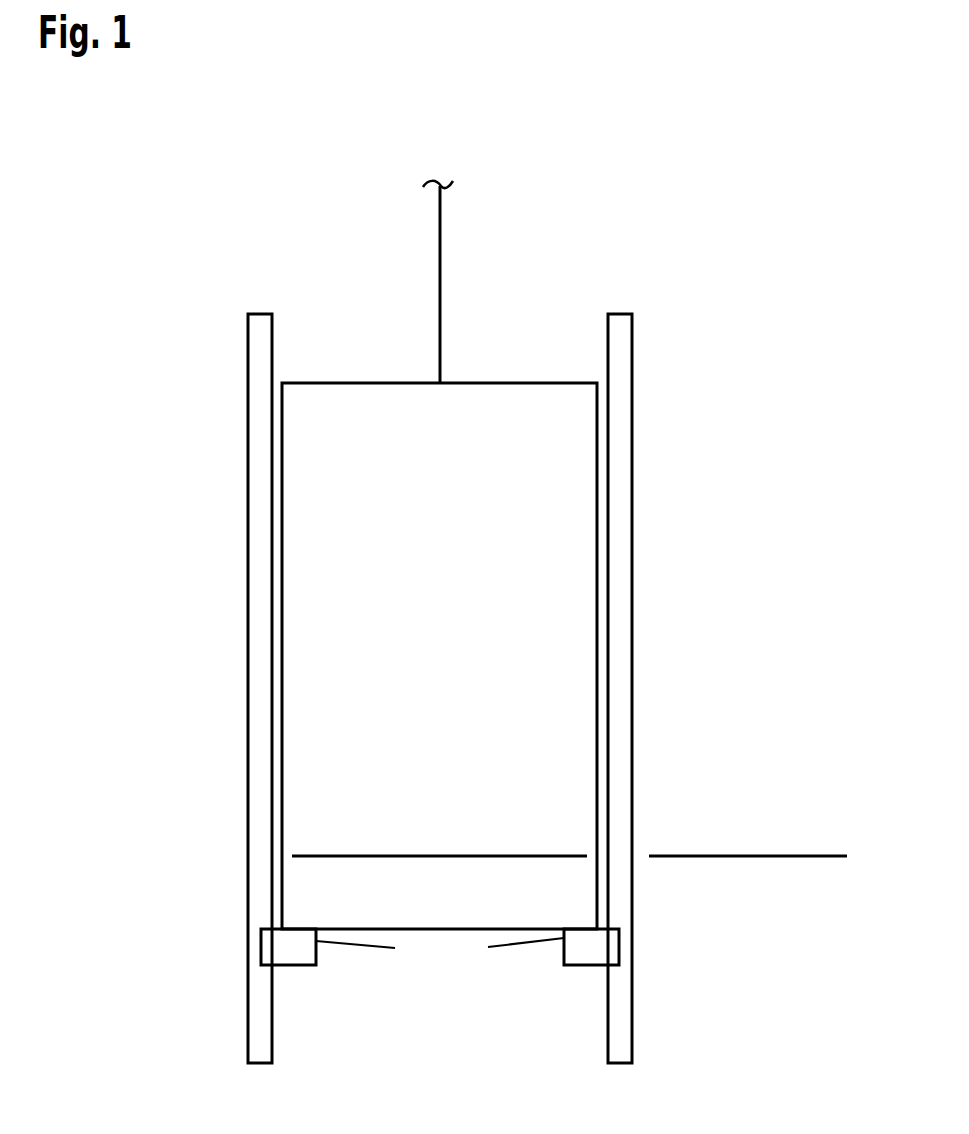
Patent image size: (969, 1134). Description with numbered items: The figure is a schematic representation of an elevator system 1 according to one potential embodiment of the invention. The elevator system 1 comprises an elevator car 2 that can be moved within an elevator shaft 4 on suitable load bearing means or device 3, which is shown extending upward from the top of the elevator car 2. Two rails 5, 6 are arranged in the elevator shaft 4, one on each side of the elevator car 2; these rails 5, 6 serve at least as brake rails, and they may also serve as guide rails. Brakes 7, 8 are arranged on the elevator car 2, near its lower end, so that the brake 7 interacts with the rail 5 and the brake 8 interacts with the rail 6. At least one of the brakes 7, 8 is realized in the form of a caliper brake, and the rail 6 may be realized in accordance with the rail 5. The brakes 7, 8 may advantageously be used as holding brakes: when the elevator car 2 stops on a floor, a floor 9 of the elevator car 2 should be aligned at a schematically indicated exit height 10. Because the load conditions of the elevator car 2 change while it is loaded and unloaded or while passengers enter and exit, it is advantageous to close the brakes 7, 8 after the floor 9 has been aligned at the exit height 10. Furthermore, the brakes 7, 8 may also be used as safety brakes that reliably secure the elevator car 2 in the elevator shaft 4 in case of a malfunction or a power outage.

The elevator system 1 is at (636, 168).
The elevator car 2 is at (561, 546).
The load bearing means 3 is at (441, 265).
The elevator shaft 4 is at (448, 1038).
The rail 5 is at (260, 355).
The rail 6 is at (620, 354).
The brake 7 is at (300, 948).
The brake 8 is at (580, 948).
The floor of the elevator car 9 is at (424, 856).
The exit height 10 is at (757, 855).